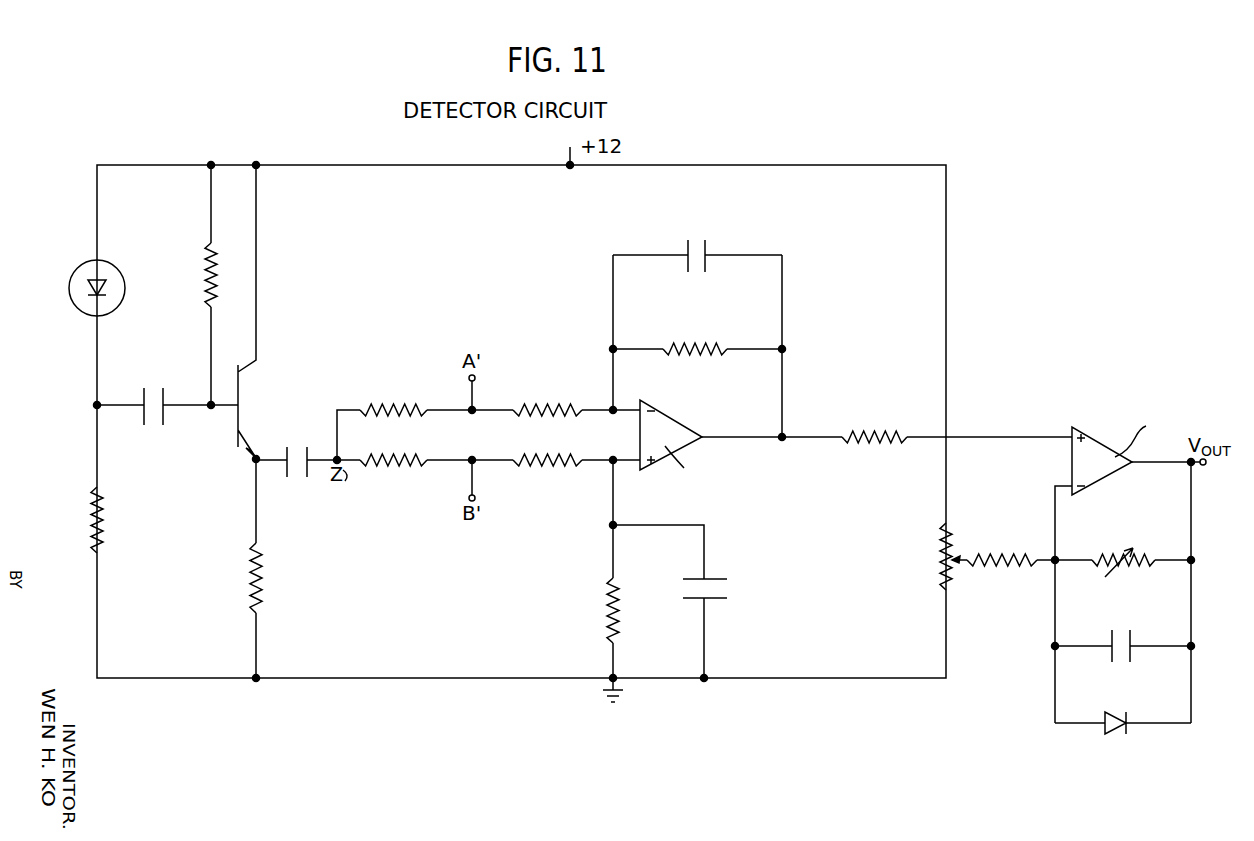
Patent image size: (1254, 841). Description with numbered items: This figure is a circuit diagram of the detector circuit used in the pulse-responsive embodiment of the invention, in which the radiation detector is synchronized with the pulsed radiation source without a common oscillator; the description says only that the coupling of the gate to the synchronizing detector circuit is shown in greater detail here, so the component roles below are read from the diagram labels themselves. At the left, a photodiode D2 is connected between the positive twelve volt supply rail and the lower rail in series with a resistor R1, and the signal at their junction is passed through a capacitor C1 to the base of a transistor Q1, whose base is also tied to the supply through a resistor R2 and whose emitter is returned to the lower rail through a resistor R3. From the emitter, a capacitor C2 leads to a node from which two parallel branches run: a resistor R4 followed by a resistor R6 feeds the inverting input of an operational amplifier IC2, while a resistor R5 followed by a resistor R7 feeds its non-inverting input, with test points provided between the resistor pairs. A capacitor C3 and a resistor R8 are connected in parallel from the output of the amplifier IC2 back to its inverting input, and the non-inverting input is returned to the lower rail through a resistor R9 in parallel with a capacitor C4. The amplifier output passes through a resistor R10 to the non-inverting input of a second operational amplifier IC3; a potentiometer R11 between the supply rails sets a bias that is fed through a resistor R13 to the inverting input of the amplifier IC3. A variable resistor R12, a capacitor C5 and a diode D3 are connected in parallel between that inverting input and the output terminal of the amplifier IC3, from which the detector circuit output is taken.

The photodiode LS40 D2 is at (120, 314).
The resistor 2.2M R2 is at (215, 298).
The capacitor .01 uF C1 is at (165, 425).
The resistor 1M R1 is at (103, 535).
The transistor 2N3711 Q1 is at (240, 398).
The resistor 47K R3 is at (262, 593).
The capacitor 0.02 uF C2 is at (287, 477).
The resistor 22K R4 is at (395, 416).
The resistor 22K R5 is at (380, 466).
The resistor 22K R6 is at (540, 416).
The resistor 22K R7 is at (538, 466).
The operational amplifier 741 IC2 is at (711, 436).
The capacitor .047 uF C3 is at (705, 262).
The resistor 1M R8 is at (715, 355).
The resistor 47K R9 is at (619, 627).
The capacitor 1.8 uF C4 is at (720, 598).
The resistor 10K R10 is at (852, 431).
The potentiometer 50K R11 is at (938, 548).
The resistor R13 is at (1000, 556).
The operational amplifier 741 IC3 is at (1123, 568).
The variable resistor 500K R12 is at (1120, 568).
The capacitor .02 uF C5 is at (1112, 655).
The diode 1N456 D3 is at (1118, 734).